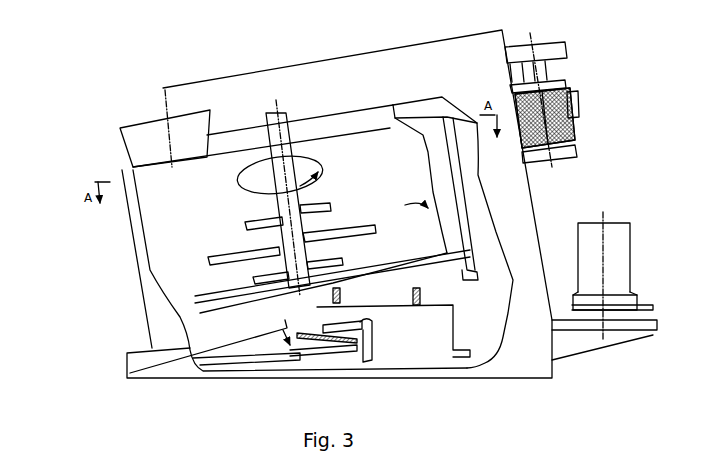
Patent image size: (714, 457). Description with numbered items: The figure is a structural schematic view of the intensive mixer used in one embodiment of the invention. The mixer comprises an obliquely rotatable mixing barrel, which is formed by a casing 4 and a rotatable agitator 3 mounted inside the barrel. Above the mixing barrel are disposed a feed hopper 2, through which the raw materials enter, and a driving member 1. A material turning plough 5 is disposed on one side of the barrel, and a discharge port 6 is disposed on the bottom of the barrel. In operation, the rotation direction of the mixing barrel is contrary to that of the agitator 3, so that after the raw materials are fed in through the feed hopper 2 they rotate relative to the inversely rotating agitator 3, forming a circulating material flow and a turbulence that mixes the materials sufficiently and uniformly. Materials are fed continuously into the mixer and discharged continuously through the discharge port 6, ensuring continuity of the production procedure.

The driving member 1 is at (225, 105).
The feed hopper 2 is at (167, 148).
The agitator 3 is at (282, 213).
The casing 4 is at (137, 250).
The material turning plough 5 is at (335, 288).
The discharge port 6 is at (283, 321).